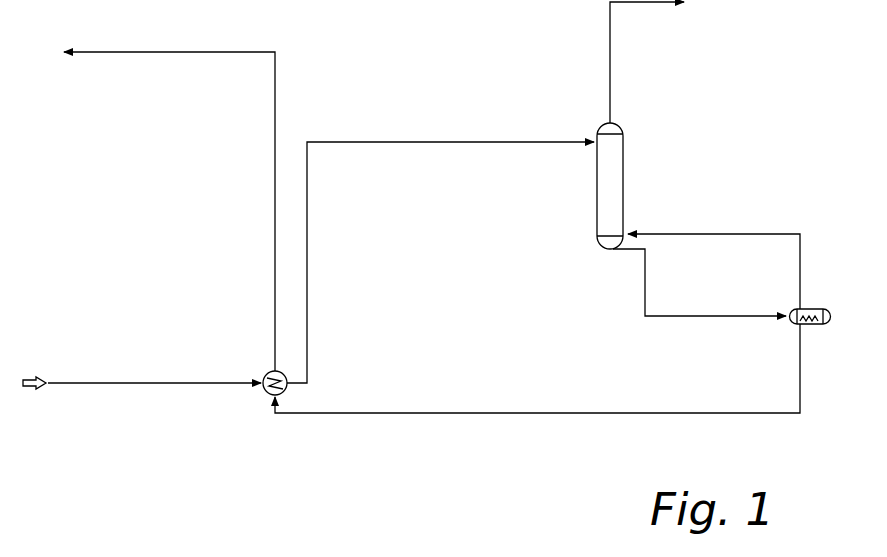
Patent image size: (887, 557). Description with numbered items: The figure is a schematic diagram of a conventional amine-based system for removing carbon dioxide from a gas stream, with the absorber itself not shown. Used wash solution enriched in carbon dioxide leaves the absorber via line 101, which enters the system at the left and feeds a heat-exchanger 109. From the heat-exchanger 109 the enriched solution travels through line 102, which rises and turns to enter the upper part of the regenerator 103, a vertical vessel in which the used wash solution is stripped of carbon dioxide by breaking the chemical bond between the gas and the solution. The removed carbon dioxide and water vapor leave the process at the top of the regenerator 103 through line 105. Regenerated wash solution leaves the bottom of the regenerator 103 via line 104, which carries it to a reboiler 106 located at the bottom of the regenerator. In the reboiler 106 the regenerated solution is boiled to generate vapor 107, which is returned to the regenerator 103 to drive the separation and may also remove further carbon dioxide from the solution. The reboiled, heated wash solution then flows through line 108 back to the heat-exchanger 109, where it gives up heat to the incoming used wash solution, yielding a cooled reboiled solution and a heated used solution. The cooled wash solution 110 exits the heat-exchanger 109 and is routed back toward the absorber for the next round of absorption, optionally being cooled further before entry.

The line 101 is at (163, 383).
The line 102 is at (307, 280).
The regenerator 103 is at (614, 177).
The line 104 is at (645, 275).
The line 105 is at (610, 62).
The reboiler 106 is at (826, 327).
The vapor 107 is at (802, 255).
The line 108 is at (697, 413).
The heat-exchanger 109 is at (266, 393).
The wash solution 110 is at (275, 210).